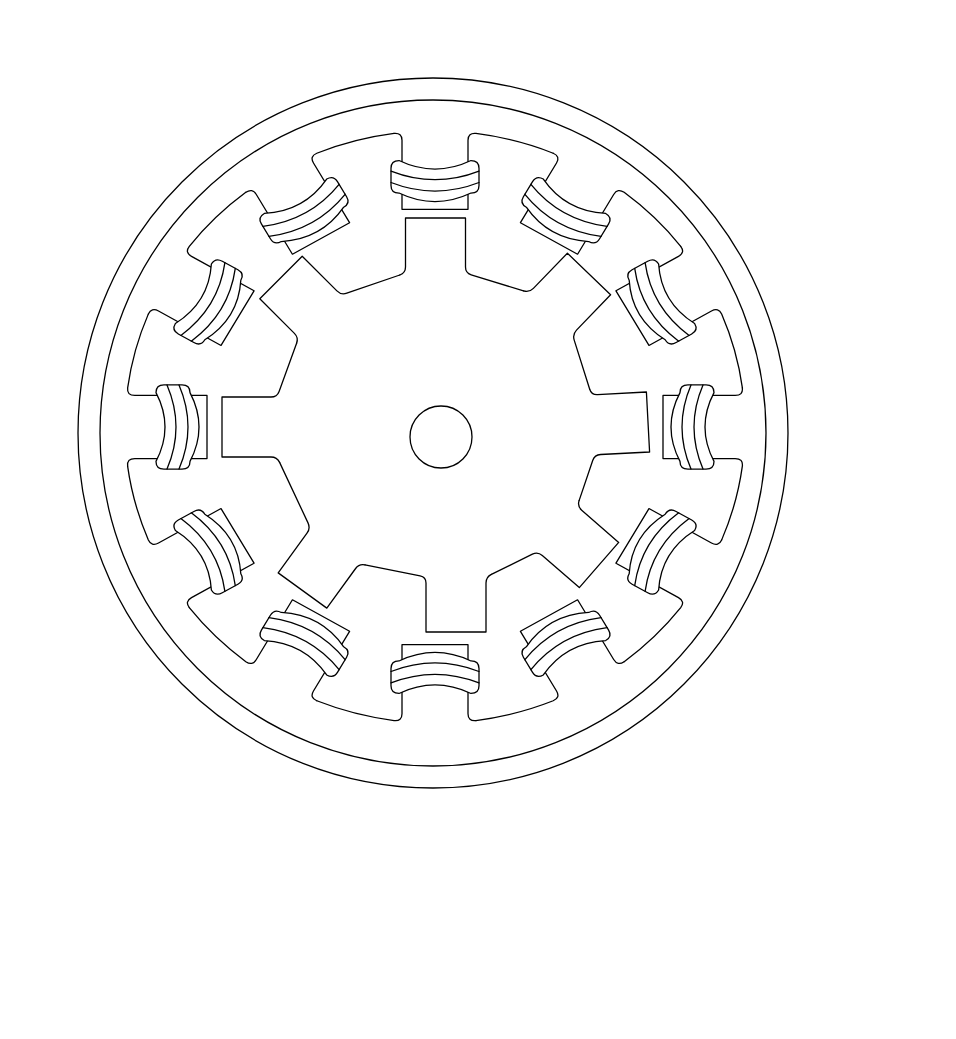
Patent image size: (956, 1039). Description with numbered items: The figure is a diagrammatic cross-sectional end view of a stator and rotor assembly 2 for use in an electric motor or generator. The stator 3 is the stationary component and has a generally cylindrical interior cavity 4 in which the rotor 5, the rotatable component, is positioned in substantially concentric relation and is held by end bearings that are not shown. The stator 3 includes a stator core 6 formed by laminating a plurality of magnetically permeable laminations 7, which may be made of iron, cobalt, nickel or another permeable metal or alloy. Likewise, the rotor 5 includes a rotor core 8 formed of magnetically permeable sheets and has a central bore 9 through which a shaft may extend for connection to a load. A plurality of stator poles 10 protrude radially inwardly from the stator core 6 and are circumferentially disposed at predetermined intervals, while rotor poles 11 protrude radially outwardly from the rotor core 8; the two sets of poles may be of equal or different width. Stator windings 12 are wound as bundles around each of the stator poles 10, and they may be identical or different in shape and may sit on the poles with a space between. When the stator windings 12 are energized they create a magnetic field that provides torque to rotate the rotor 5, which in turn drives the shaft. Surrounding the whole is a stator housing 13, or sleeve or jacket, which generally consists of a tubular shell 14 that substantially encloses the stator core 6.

The stator and rotor assembly 2 is at (200, 60).
The stator 3 is at (573, 190).
The interior cavity 4 is at (250, 490).
The rotor 5 is at (722, 403).
The stator core 6 is at (466, 426).
The laminations 7 is at (700, 572).
The rotor core 8 is at (622, 418).
The bore 9 is at (440, 437).
The stator poles 10 is at (445, 739).
The rotor poles 11 is at (585, 562).
The stator windings 12 is at (470, 670).
The stator housing 13 is at (433, 436).
The shell 14 is at (249, 723).